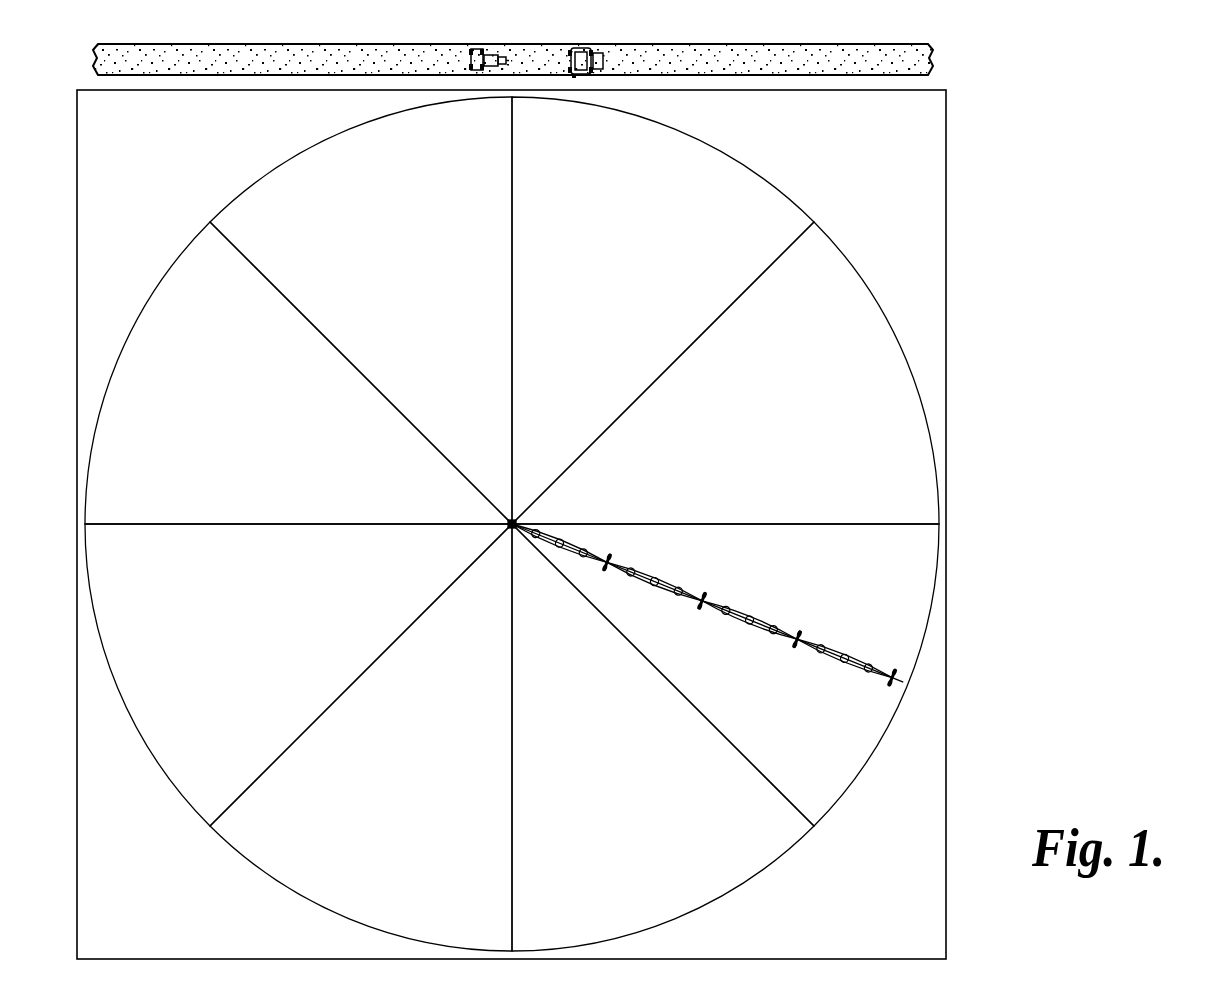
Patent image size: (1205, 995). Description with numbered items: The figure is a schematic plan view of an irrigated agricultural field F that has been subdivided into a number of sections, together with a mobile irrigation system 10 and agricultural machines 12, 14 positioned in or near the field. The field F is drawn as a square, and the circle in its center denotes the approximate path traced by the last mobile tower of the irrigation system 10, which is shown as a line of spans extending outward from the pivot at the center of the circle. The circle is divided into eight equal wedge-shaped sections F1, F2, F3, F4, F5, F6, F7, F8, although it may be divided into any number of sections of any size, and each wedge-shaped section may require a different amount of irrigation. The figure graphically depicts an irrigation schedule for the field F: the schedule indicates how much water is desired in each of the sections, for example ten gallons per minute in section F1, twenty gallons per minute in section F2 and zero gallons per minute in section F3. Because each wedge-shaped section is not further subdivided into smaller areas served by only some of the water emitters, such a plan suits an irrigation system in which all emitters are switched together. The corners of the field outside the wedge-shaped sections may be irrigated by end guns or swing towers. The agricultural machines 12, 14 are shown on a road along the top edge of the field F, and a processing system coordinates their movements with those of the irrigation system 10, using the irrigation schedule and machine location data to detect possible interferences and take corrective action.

The irrigated field F is at (593, 524).
The mobile irrigation system 10 is at (752, 598).
The agricultural machine 12 is at (479, 71).
The agricultural machine 14 is at (590, 73).
The wedge-shaped section F1 is at (663, 310).
The wedge-shaped section F2 is at (725, 373).
The wedge-shaped section F3 is at (725, 675).
The wedge-shaped section F4 is at (663, 737).
The wedge-shaped section F5 is at (361, 737).
The wedge-shaped section F6 is at (298, 675).
The wedge-shaped section F7 is at (298, 373).
The wedge-shaped section F8 is at (361, 310).